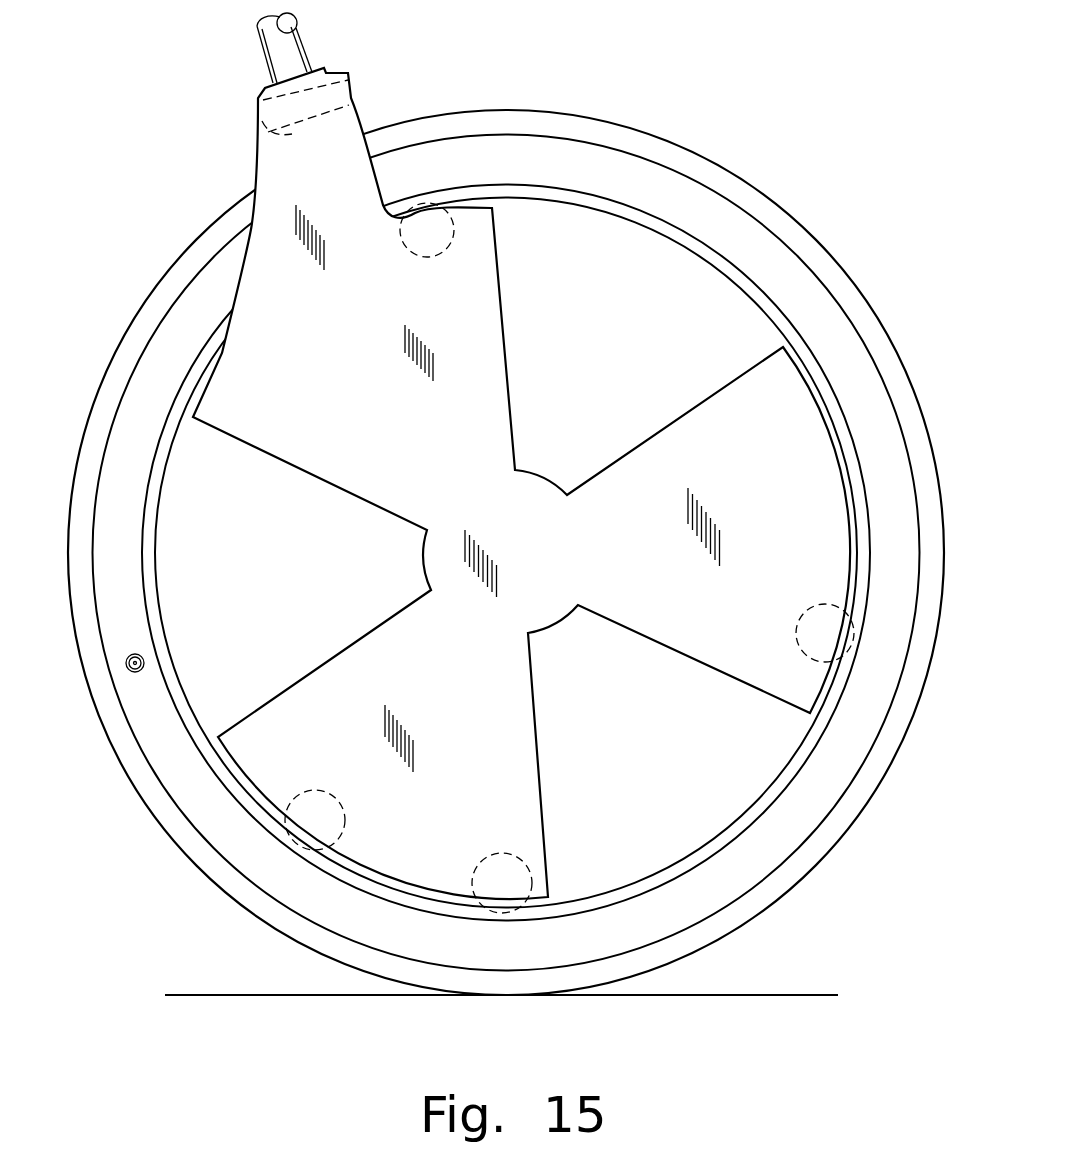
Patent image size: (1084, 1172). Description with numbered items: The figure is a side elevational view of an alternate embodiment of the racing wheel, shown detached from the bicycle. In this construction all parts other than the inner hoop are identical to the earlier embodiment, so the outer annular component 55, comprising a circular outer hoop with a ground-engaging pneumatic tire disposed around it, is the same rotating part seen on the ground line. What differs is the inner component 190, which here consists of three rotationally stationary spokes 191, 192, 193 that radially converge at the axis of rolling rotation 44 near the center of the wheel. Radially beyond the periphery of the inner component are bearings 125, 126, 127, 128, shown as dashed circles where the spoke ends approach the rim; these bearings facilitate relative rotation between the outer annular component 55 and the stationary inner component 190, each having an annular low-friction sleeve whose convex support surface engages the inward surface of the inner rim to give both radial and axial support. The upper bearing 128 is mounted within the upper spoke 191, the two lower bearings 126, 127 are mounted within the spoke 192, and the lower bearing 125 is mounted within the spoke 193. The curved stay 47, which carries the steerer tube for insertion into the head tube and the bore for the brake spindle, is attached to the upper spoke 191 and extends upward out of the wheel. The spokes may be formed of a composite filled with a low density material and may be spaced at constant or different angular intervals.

The axis of rolling rotation 44 is at (507, 553).
The stay 47 is at (296, 166).
The outer annular component 55 is at (644, 160).
The lower bearing 125 is at (823, 637).
The lower bearing 126 is at (503, 880).
The lower bearing 127 is at (313, 817).
The upper bearing 128 is at (441, 239).
The inner component 190 is at (300, 515).
The spoke 191 is at (468, 326).
The spoke 192 is at (505, 733).
The spoke 193 is at (736, 401).